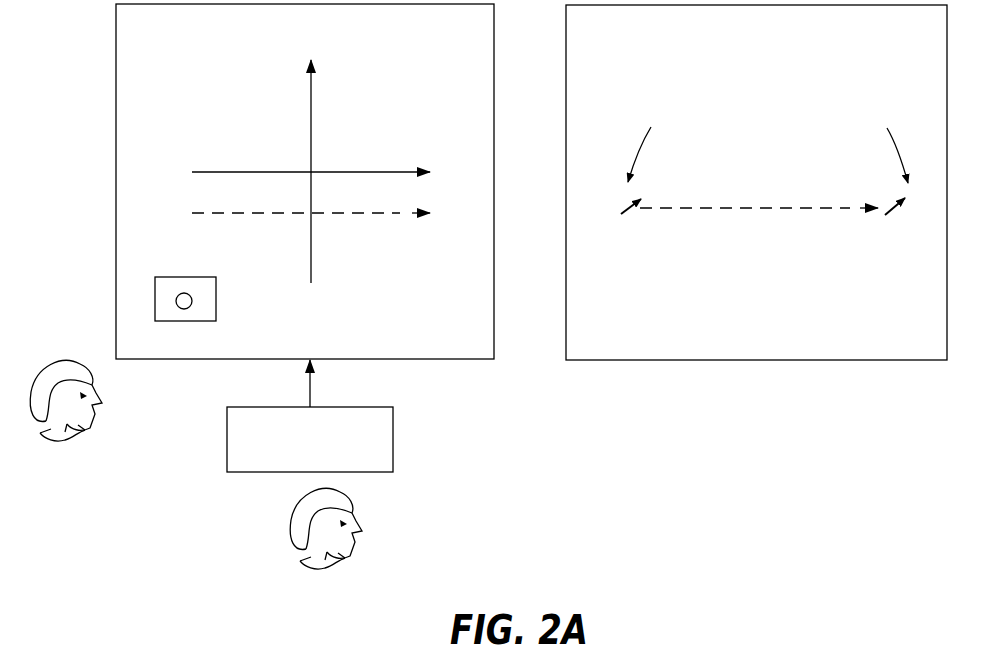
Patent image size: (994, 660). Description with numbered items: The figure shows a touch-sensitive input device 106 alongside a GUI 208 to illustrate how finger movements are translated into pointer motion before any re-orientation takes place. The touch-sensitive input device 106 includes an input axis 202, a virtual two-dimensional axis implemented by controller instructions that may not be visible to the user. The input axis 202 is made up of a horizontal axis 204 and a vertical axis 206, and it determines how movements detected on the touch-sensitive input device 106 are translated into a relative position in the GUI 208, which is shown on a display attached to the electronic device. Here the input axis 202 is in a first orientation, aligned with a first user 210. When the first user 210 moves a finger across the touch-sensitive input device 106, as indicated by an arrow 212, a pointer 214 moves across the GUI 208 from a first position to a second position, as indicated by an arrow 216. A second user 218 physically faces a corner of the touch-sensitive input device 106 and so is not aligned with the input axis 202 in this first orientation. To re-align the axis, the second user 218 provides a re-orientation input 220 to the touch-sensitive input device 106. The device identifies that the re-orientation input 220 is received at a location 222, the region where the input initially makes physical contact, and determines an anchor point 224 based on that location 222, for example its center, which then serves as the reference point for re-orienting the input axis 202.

The touch-sensitive input device 106 is at (305, 181).
The input axis 202 is at (389, 104).
The horizontal axis 204 is at (243, 172).
The vertical axis 206 is at (311, 248).
The GUI 208 is at (756, 182).
The first user 210 is at (325, 570).
The arrow 212 is at (265, 215).
The pointer 214 is at (630, 203).
The arrow 216 is at (713, 209).
The second user 218 is at (67, 443).
The re-orientation input 220 is at (310, 416).
The location 222 is at (185, 321).
The anchor point 224 is at (192, 299).